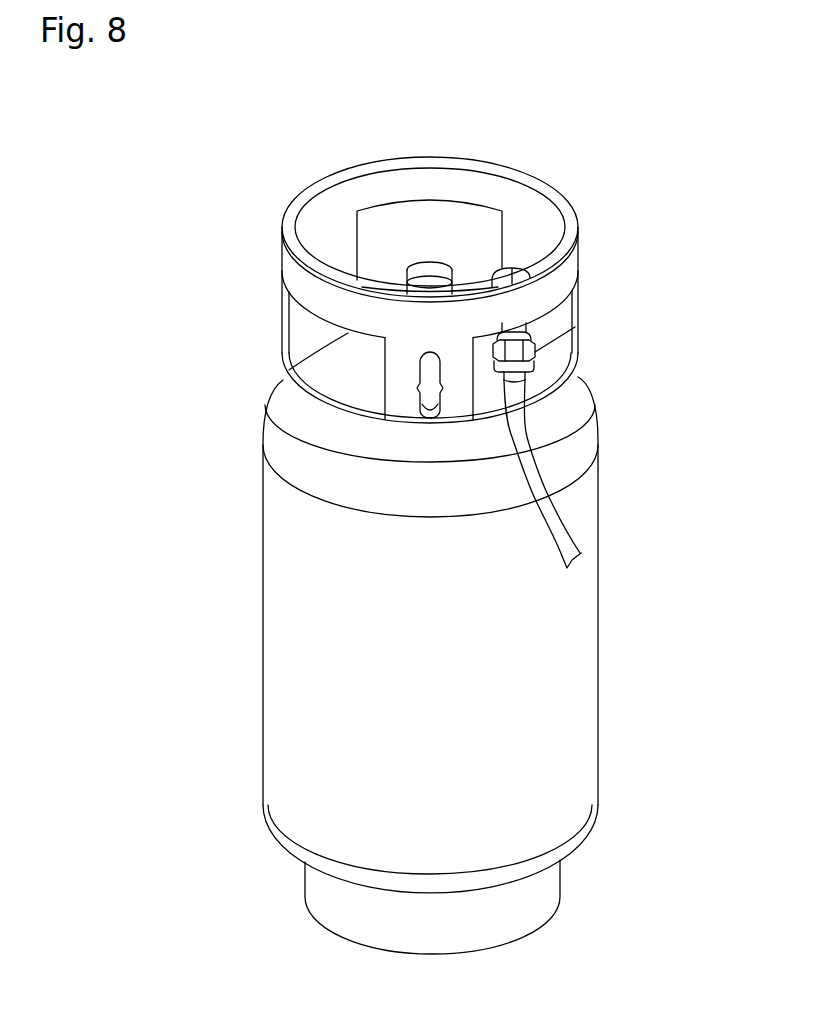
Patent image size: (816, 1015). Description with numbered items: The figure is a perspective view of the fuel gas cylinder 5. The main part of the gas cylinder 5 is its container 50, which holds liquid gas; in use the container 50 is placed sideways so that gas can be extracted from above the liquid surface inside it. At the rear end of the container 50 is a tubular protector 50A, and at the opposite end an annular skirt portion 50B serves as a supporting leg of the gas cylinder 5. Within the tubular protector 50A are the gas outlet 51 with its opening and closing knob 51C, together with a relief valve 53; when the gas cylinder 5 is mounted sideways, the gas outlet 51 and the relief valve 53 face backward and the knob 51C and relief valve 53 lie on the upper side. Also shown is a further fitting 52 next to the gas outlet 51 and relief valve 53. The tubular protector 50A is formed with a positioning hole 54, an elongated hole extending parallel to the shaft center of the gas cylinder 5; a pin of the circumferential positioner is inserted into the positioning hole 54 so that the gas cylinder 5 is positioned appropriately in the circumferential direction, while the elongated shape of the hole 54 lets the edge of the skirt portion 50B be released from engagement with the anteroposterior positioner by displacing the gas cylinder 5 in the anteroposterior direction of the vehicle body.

The gas cylinder 5 is at (257, 557).
The container 50 is at (599, 679).
The tubular protector 50A is at (572, 212).
The annular skirt portion 50B is at (312, 893).
The gas outlet 51 is at (538, 333).
The opening and closing knob 51C is at (528, 263).
The valve 52 is at (430, 290).
The relief valve 53 is at (414, 268).
The positioning hole 54 is at (430, 420).